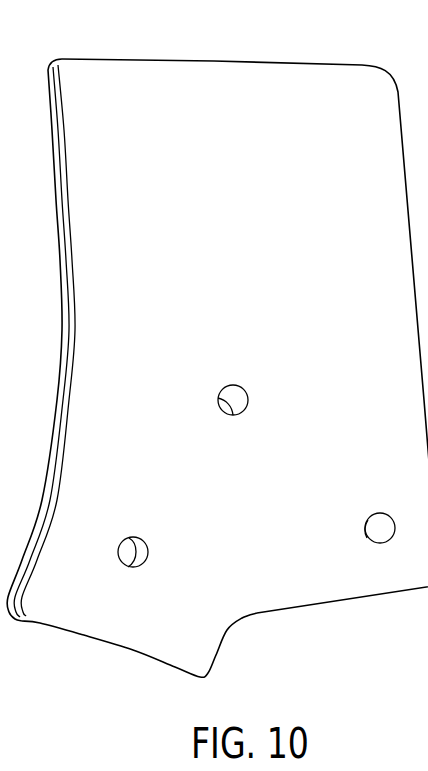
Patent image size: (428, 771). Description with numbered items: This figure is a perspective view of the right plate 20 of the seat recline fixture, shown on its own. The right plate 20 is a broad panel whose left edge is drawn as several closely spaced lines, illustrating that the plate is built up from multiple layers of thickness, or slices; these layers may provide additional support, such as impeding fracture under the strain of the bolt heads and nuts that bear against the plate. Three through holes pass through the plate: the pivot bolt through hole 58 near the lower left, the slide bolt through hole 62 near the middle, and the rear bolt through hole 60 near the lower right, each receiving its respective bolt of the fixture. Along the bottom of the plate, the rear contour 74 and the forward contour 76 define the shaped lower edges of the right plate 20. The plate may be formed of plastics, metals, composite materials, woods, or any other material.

The right plate 20 is at (193, 88).
The pivot bolt through hole 58 is at (141, 541).
The rear bolt through hole 60 is at (381, 527).
The slide bolt through hole 62 is at (231, 392).
The rear contour 74 is at (352, 597).
The forward contour 76 is at (129, 645).